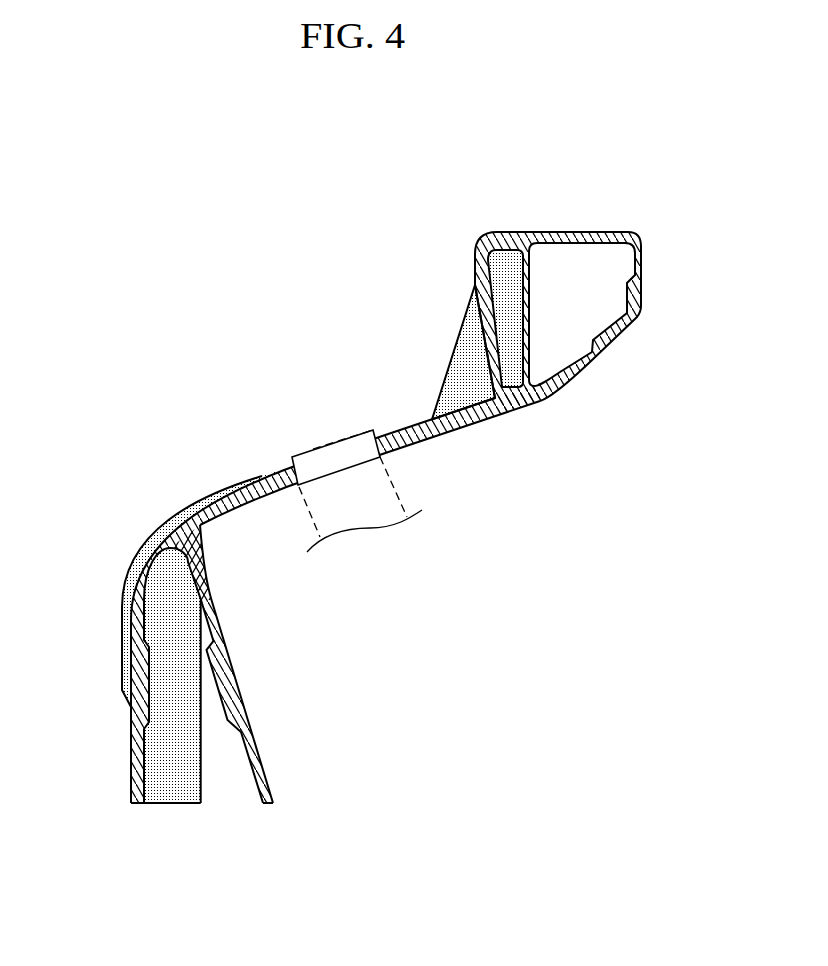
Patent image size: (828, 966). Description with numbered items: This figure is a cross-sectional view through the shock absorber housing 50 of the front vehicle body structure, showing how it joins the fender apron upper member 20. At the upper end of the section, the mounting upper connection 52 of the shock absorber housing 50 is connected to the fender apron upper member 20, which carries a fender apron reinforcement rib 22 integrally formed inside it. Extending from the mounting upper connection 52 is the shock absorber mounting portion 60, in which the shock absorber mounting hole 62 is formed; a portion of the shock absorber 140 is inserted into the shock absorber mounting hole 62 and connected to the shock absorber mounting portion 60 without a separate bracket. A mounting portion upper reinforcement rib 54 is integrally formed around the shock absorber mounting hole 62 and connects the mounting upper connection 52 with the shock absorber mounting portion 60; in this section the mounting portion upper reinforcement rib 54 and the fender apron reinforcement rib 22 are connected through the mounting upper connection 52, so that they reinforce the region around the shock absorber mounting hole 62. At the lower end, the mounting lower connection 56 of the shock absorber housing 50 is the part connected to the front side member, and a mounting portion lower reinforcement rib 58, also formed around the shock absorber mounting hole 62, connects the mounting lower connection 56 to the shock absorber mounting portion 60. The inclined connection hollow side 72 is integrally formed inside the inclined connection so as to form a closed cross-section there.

The fender apron upper member 20 is at (637, 221).
The fender apron reinforcement rib 22 is at (503, 268).
The shock absorber housing 50 is at (454, 472).
The mounting upper connection 52 is at (495, 332).
The mounting portion upper reinforcement rib 54 is at (452, 362).
The mounting lower connection 56 is at (158, 517).
The mounting portion lower reinforcement rib 58 is at (183, 495).
The shock absorber mounting portion 60 is at (408, 423).
The shock absorber mounting hole 62 is at (340, 463).
The inclined connection hollow side 72 is at (167, 765).
The shock absorber 140 is at (297, 528).